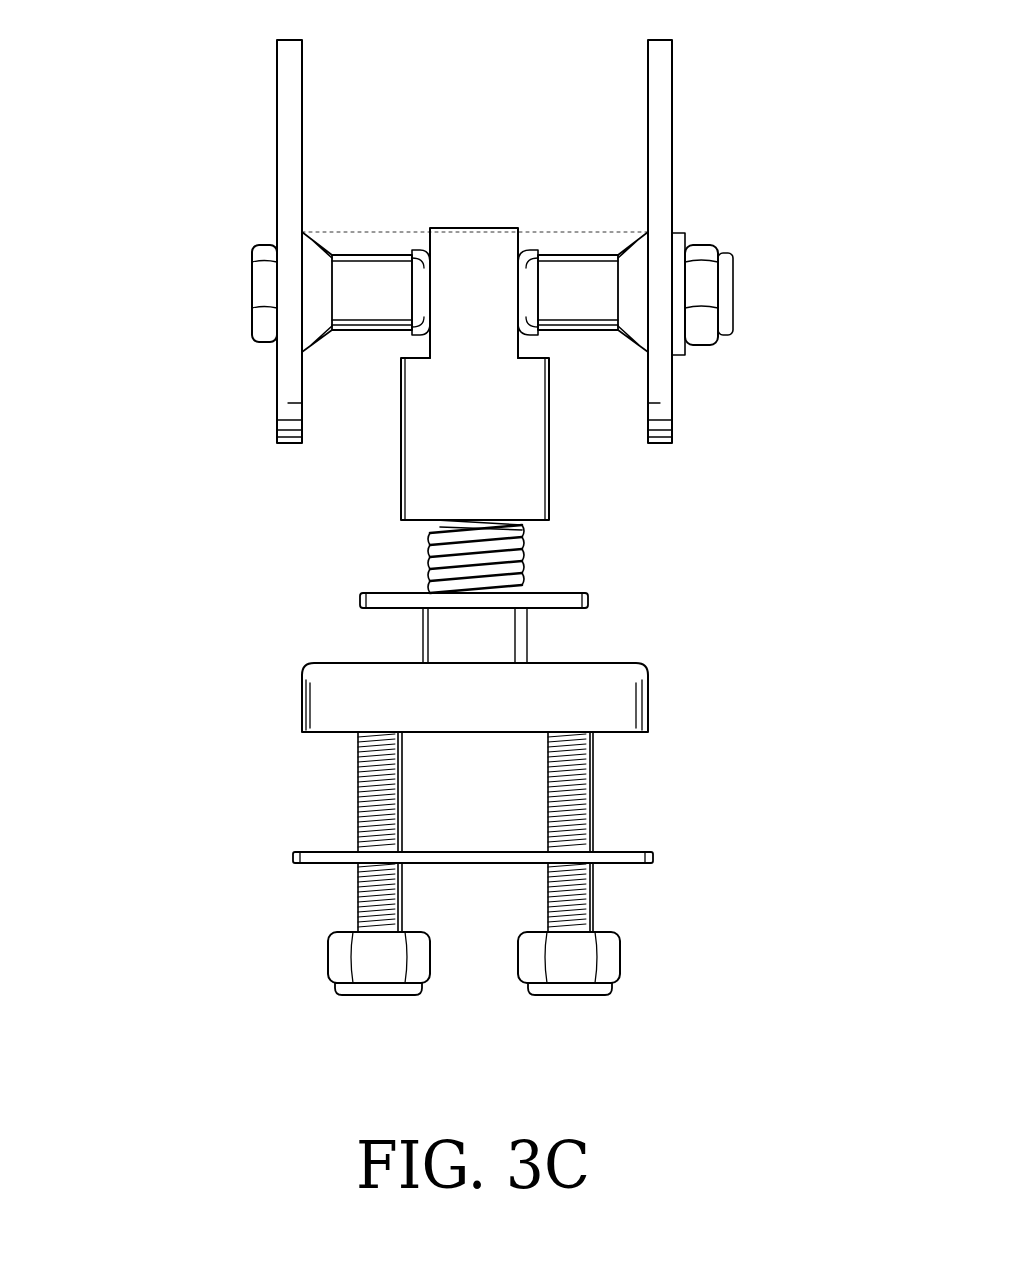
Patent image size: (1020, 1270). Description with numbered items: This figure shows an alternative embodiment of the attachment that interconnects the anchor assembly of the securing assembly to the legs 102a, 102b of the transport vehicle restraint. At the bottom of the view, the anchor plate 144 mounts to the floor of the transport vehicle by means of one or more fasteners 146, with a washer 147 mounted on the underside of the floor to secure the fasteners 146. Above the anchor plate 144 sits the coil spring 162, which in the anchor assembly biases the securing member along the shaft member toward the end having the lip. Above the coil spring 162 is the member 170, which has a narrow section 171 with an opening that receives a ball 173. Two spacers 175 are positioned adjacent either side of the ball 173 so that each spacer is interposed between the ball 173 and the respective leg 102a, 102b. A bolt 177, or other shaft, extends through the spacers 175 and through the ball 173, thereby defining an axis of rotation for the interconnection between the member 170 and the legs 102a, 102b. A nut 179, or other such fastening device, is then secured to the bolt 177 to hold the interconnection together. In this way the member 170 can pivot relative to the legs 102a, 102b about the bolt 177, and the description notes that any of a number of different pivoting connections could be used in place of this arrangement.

The leg 102a is at (275, 395).
The leg 102b is at (672, 388).
The anchor plate 144 is at (302, 695).
The fastener 146 is at (358, 800).
The washer 147 is at (620, 851).
The coil spring 162 is at (432, 557).
The member 170 is at (545, 468).
The narrow section 171 is at (472, 226).
The ball 173 is at (530, 245).
The spacer 175 is at (368, 250).
The bolt 177 is at (258, 288).
The nut 179 is at (710, 250).